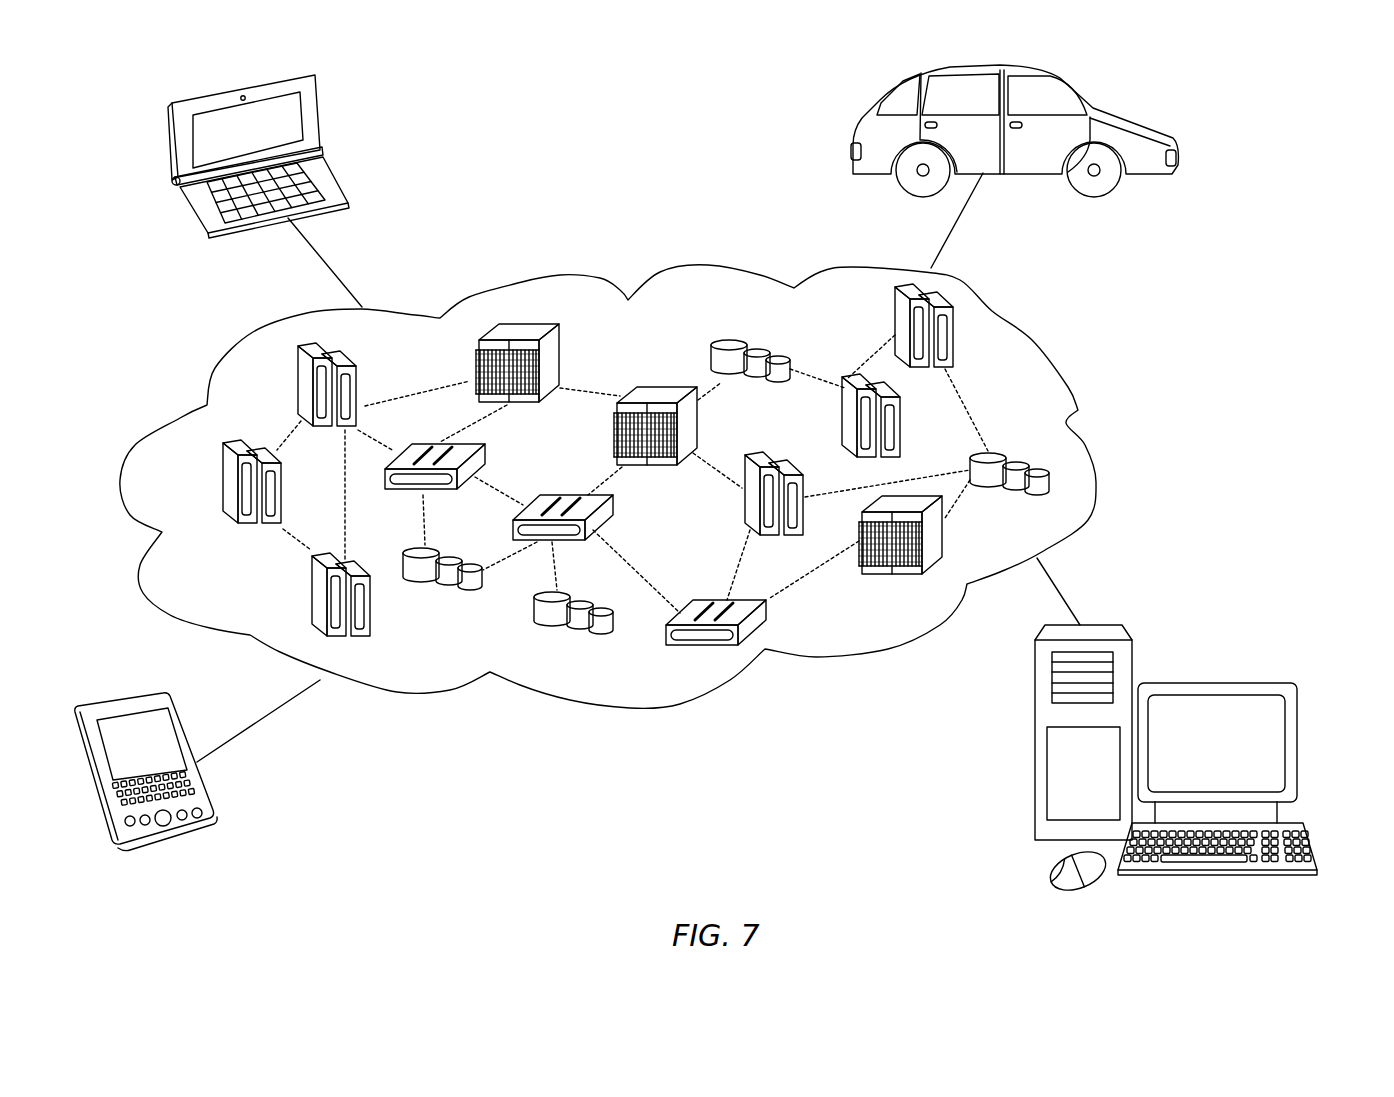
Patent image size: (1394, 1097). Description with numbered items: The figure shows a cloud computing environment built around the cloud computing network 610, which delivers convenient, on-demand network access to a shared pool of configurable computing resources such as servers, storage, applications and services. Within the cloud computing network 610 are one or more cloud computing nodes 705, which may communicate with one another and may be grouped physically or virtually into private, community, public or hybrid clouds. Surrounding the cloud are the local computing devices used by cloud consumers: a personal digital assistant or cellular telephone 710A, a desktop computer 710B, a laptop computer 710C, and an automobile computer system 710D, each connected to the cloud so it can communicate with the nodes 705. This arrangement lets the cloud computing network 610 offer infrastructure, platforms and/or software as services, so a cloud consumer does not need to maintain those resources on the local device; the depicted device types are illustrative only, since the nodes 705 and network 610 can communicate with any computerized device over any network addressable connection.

The cloud computing network 610 is at (652, 88).
The cloud computing nodes 705 is at (1093, 480).
The personal digital assistant (PDA) or cellular telephone 710A is at (213, 800).
The desktop computer 710B is at (1297, 743).
The laptop computer 710C is at (318, 103).
The automobile computer system 710D is at (1180, 142).